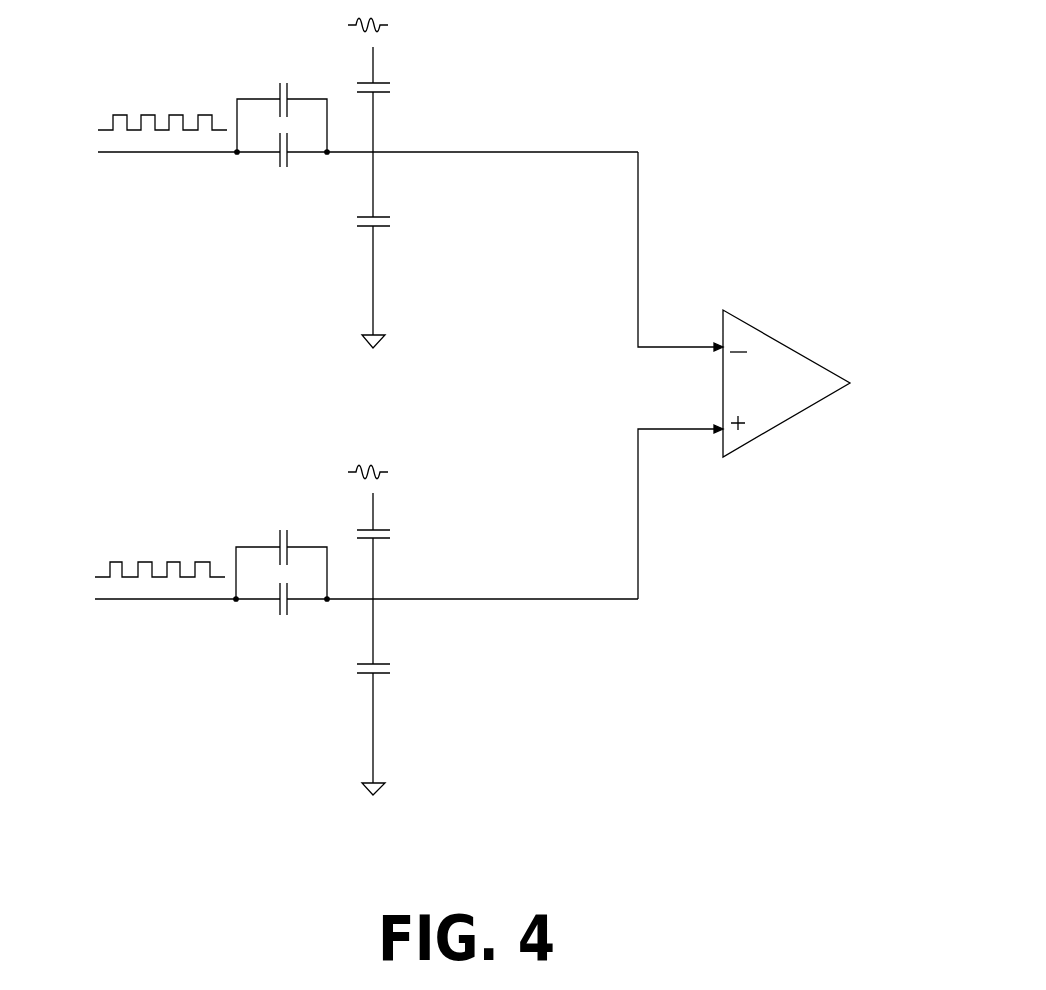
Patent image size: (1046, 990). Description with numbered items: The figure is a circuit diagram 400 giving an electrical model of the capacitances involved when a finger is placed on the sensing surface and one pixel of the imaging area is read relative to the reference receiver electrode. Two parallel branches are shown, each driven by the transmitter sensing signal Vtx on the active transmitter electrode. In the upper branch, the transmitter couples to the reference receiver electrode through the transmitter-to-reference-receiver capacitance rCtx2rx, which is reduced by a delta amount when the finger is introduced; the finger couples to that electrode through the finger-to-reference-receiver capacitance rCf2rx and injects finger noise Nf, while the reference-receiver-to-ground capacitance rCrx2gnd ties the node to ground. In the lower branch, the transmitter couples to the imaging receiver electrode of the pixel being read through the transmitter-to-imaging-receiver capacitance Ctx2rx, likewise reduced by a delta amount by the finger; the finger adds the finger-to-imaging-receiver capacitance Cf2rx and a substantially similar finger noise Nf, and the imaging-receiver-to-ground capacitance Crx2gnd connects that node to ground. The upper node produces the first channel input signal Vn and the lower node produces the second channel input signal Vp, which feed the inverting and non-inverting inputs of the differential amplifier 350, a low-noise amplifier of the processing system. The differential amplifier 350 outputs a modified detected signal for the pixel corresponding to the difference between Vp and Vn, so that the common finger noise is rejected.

The differential amplifier 350 is at (759, 437).
The circuit diagram 400 is at (447, 470).
The transmitter sensing signal Vtx is at (136, 356).
The transmitter-to-reference-receiver capacitance rCtx2rx is at (273, 128).
The transmitter-to-imaging-receiver capacitance Ctx2rx is at (272, 570).
The finger noise Nf is at (477, 251).
The finger-to-reference-receiver capacitance rCf2rx is at (419, 99).
The finger-to-imaging-receiver capacitance Cf2rx is at (415, 546).
The reference-receiver-to-ground capacitance rCrx2gnd is at (437, 250).
The imaging-receiver-to-ground capacitance Crx2gnd is at (433, 697).
The first channel input signal Vn is at (680, 251).
The second channel input signal Vp is at (680, 512).